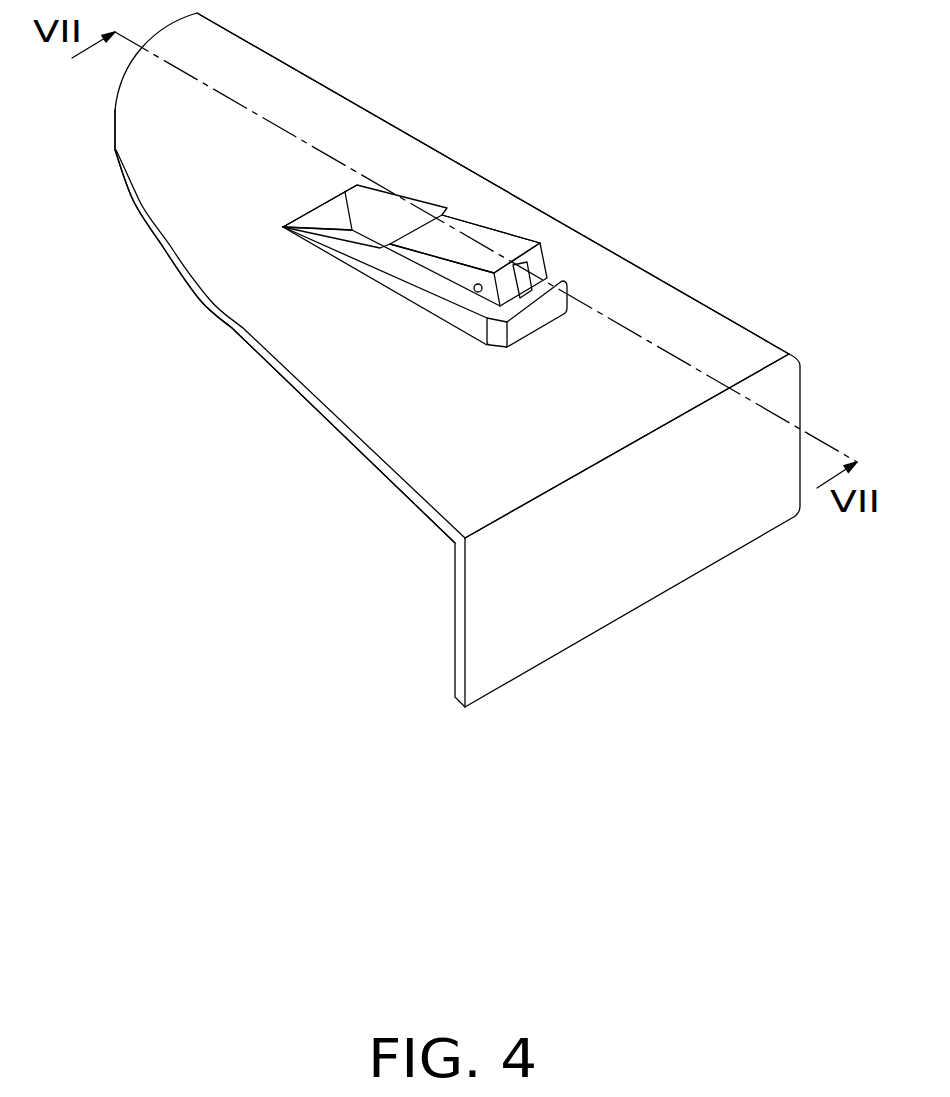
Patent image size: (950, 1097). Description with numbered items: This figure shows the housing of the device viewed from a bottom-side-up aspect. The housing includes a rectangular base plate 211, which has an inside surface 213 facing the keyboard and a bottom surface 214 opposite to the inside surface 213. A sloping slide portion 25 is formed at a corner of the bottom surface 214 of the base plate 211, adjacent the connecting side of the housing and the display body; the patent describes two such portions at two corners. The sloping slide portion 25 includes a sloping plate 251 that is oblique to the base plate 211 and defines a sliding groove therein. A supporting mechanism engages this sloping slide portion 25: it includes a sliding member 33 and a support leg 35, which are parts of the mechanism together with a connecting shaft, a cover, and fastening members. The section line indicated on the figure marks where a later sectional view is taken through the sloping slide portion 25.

The sloping slide portion 25 is at (408, 223).
The sloping plate 251 is at (352, 230).
The support leg 35 is at (513, 246).
The sliding member 33 is at (523, 287).
The base plate 211 is at (237, 327).
The inside surface 213 is at (322, 413).
The bottom surface 214 is at (230, 275).